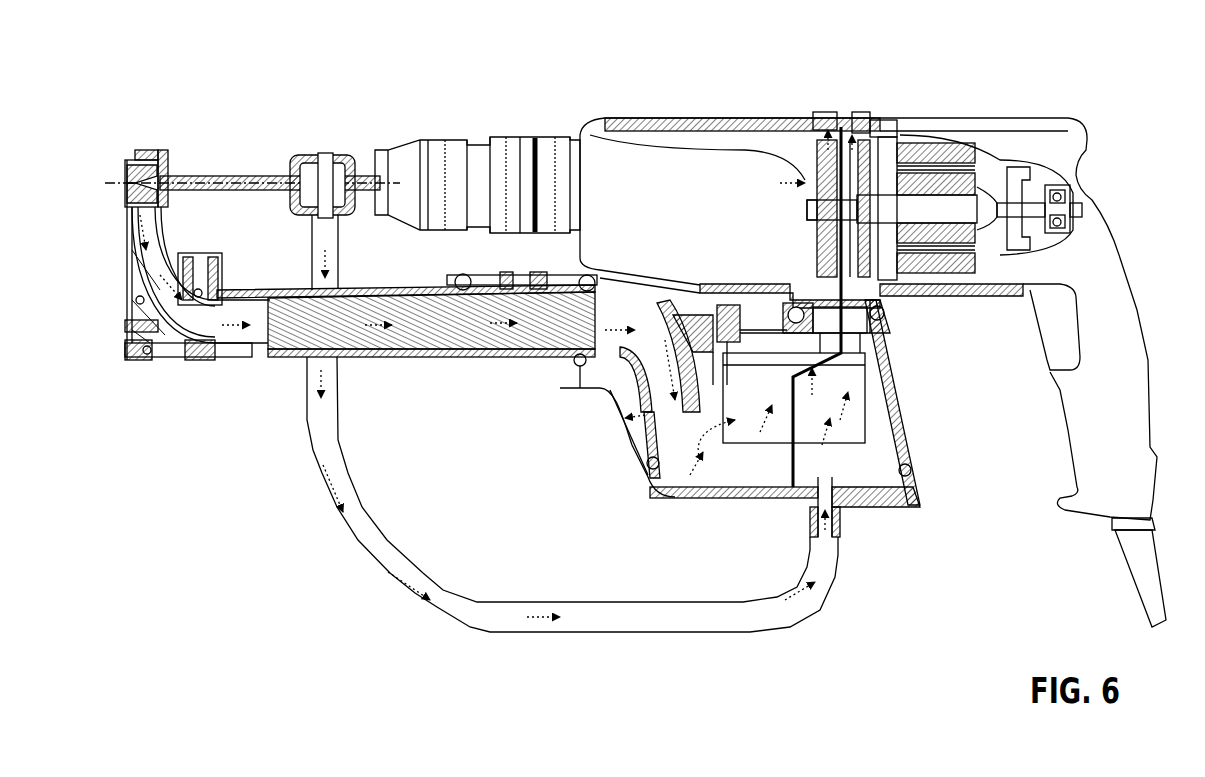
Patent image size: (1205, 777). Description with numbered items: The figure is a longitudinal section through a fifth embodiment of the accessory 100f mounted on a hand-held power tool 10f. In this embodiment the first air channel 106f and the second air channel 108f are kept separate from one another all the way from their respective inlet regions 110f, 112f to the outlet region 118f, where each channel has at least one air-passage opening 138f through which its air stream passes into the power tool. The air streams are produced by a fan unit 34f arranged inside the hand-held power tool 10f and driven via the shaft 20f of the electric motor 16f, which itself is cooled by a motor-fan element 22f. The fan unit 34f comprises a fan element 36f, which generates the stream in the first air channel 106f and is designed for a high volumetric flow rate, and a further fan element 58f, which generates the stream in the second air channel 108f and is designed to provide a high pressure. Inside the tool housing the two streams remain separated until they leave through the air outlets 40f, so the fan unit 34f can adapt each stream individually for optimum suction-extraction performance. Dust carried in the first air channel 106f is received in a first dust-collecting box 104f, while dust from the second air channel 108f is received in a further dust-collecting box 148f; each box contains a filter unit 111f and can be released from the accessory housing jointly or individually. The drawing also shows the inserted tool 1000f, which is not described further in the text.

The hand-held power tool 10f is at (1105, 170).
The electric motor 16f is at (978, 140).
The shaft 20f is at (963, 160).
The motor-fan element 22f is at (883, 125).
The fan unit 34f is at (812, 183).
The fan element 36f is at (815, 143).
The air outlet 40f is at (818, 112).
The further fan element 58f is at (852, 112).
The accessory 100f is at (883, 518).
The first dust-collecting box 104f is at (703, 480).
The first air channel 106f is at (420, 318).
The second air channel 108f is at (330, 443).
The inlet region 110f is at (138, 153).
The filter unit 111f is at (650, 440).
The inlet region 112f is at (337, 150).
The outlet region 118f is at (900, 335).
The air-passage opening 138f is at (893, 323).
The further dust-collecting box 148f is at (772, 433).
The drill bit 1000f is at (213, 167).